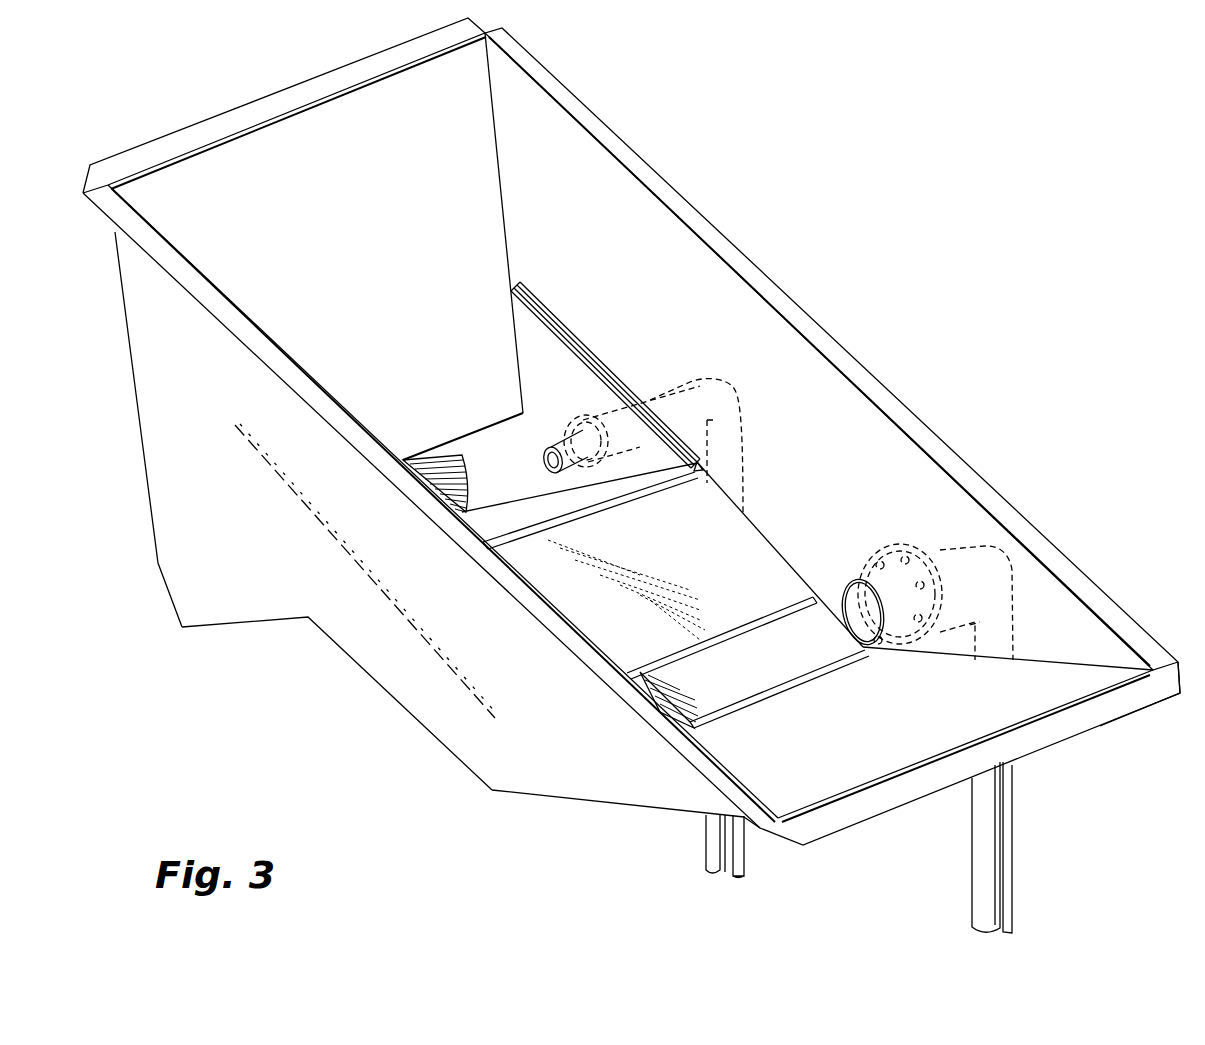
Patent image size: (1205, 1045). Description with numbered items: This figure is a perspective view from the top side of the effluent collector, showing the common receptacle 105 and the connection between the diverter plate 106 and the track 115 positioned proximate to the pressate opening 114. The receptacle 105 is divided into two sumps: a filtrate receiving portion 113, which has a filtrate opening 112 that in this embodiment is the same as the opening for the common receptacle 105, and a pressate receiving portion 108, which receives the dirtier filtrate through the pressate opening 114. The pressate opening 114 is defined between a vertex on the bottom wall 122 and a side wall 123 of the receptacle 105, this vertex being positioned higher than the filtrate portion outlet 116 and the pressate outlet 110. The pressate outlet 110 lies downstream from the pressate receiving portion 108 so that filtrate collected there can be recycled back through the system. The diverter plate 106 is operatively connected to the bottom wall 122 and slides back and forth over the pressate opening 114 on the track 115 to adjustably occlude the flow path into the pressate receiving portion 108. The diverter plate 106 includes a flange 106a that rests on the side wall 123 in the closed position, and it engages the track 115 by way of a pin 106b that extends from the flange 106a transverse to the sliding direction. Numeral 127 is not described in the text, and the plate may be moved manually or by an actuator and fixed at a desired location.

The receptacle 105 is at (148, 340).
The diverter plate 106 is at (748, 578).
The flange 106a is at (617, 487).
The pin 106b is at (708, 460).
The pressate receiving portion 108 is at (234, 632).
The pressate outlet 110 is at (545, 462).
The filtrate opening 112 is at (1135, 648).
The filtrate receiving portion 113 is at (562, 808).
The pressate opening 114 is at (490, 280).
The track 115 is at (600, 372).
The filtrate portion outlet 116 is at (840, 590).
The bottom wall 122 is at (748, 650).
The side wall 123 is at (292, 168).
The skirt panel with legs 127 is at (600, 805).